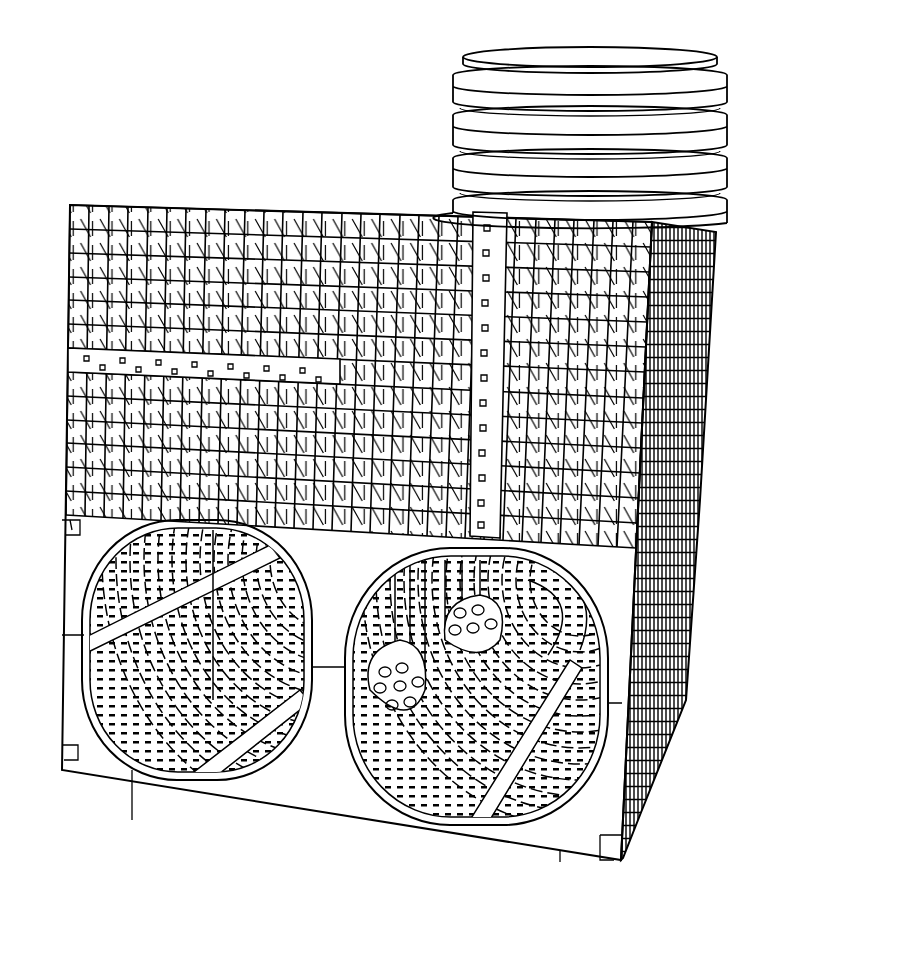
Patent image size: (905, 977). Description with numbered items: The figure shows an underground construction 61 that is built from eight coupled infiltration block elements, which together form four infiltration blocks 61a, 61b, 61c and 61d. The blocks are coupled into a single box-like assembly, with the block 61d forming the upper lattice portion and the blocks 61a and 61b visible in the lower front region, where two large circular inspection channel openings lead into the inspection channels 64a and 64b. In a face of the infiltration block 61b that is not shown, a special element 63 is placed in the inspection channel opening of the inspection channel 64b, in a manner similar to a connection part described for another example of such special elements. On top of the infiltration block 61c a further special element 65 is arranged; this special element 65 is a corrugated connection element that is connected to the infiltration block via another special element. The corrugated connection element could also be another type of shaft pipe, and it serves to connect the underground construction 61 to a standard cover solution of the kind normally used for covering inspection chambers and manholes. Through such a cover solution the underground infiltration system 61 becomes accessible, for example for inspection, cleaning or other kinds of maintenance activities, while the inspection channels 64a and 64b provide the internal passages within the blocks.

The underground construction 61 is at (213, 104).
The infiltration block 61a is at (150, 752).
The infiltration block 61b is at (683, 700).
The infiltration block 61c is at (712, 391).
The infiltration block 61d is at (120, 270).
The special element 63 is at (557, 612).
The inspection channel 64a is at (210, 703).
The inspection channel 64b is at (445, 807).
The special element 65 is at (706, 82).